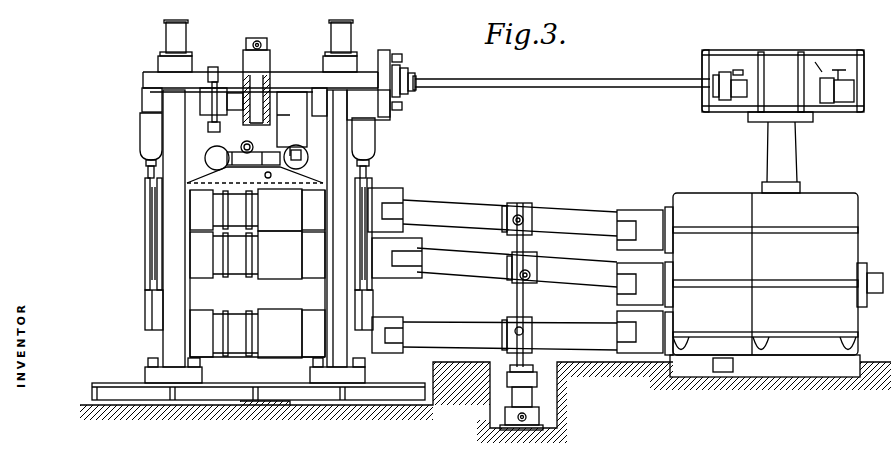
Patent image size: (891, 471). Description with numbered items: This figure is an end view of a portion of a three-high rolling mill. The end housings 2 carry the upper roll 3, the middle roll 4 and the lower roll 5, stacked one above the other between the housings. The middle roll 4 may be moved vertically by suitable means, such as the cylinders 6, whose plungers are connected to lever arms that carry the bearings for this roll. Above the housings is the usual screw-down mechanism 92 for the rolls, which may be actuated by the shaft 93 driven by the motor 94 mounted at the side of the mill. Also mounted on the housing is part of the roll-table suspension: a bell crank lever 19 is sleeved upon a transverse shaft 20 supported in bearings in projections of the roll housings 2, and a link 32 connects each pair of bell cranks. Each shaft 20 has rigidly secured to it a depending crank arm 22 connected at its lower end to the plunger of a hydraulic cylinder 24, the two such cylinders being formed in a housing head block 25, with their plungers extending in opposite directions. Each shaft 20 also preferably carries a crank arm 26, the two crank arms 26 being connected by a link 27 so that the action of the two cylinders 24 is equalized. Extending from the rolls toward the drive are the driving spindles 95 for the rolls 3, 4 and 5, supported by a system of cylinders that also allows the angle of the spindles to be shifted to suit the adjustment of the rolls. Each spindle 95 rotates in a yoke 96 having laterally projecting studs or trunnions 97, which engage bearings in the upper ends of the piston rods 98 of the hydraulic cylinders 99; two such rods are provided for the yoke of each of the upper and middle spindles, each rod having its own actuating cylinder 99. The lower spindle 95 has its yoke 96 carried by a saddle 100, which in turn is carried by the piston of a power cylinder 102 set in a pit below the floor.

The end housings 2 is at (260, 227).
The upper roll 3 is at (257, 210).
The middle roll 4 is at (257, 255).
The lower roll 5 is at (257, 333).
The cylinders 6 is at (146, 136).
The bell crank lever 19 is at (268, 70).
The transverse shaft 20 is at (358, 104).
The crank arm 22 is at (293, 137).
The hydraulic cylinder 24 is at (311, 165).
The housing head block 25 is at (241, 139).
The crank arm 26 is at (384, 50).
The link 27 is at (405, 66).
The link 32 is at (257, 40).
The screw-down mechanism 92 is at (165, 66).
The shaft 93 is at (562, 82).
The motor 94 is at (780, 66).
The driving spindles 95 is at (515, 270).
The yoke 96 is at (526, 211).
The studs or trunnions 97 is at (503, 218).
The piston rods 98 is at (517, 300).
The hydraulic cylinders 99 is at (503, 397).
The saddle 100 is at (513, 364).
The power cylinder 102 is at (512, 396).